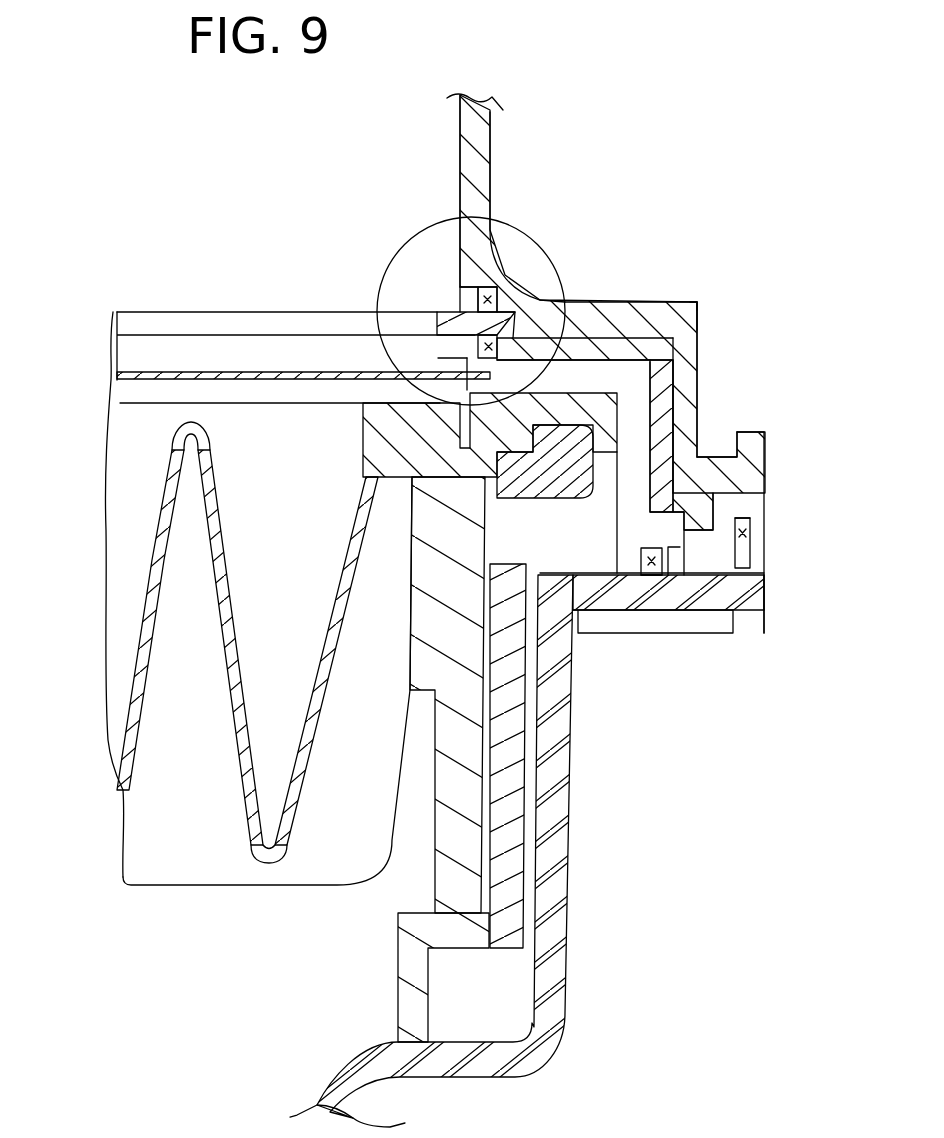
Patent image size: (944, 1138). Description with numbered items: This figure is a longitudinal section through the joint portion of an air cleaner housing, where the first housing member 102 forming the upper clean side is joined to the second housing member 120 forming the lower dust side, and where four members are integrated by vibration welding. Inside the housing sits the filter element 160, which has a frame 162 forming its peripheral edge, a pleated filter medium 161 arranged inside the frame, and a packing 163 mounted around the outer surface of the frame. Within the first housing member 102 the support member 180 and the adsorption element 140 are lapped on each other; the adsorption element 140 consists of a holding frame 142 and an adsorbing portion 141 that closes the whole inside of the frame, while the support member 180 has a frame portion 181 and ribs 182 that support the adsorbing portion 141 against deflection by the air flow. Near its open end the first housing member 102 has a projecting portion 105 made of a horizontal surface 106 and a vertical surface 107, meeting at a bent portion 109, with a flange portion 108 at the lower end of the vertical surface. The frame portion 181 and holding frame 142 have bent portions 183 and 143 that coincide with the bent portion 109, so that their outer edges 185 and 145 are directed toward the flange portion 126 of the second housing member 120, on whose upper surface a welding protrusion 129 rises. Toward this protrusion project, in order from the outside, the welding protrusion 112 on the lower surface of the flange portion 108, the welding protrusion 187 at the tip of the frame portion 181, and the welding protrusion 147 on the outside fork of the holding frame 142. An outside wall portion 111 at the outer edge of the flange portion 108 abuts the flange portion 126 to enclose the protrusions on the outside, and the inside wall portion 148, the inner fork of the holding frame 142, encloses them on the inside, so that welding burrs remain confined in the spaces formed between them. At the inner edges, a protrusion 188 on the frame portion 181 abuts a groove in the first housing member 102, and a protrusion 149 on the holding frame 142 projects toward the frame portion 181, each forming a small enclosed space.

The first housing member 102 is at (493, 158).
The projecting portion 105 is at (682, 282).
The horizontal surface 106 is at (580, 300).
The vertical surface 107 is at (733, 430).
The flange portion 108 is at (728, 437).
The bent portion 109 is at (697, 303).
The outside wall portion 111 is at (752, 533).
The welding protrusion 112 is at (765, 580).
The second housing member 120 is at (540, 850).
The flange portion 126 is at (707, 637).
The welding protrusion 129 is at (713, 493).
The adsorption element 140 is at (298, 368).
The adsorbing portion 141 is at (143, 380).
The holding frame 142 is at (693, 318).
The bent portion 143 is at (667, 380).
The outer edge 145 is at (617, 452).
The welding protrusion 147 is at (682, 538).
The inside wall portion 148 is at (616, 562).
The protrusion 149 is at (467, 350).
The filter element 160 is at (192, 889).
The pleated filter medium 161 is at (235, 708).
The frame 162 is at (415, 545).
The packing 163 is at (470, 428).
The support member 180 is at (225, 310).
The frame portion 181 is at (632, 340).
The ribs 182 is at (158, 323).
The bent portion 183 is at (673, 340).
The outer edge 185 is at (690, 412).
The welding protrusion 187 is at (765, 615).
The protrusion 188 is at (460, 296).